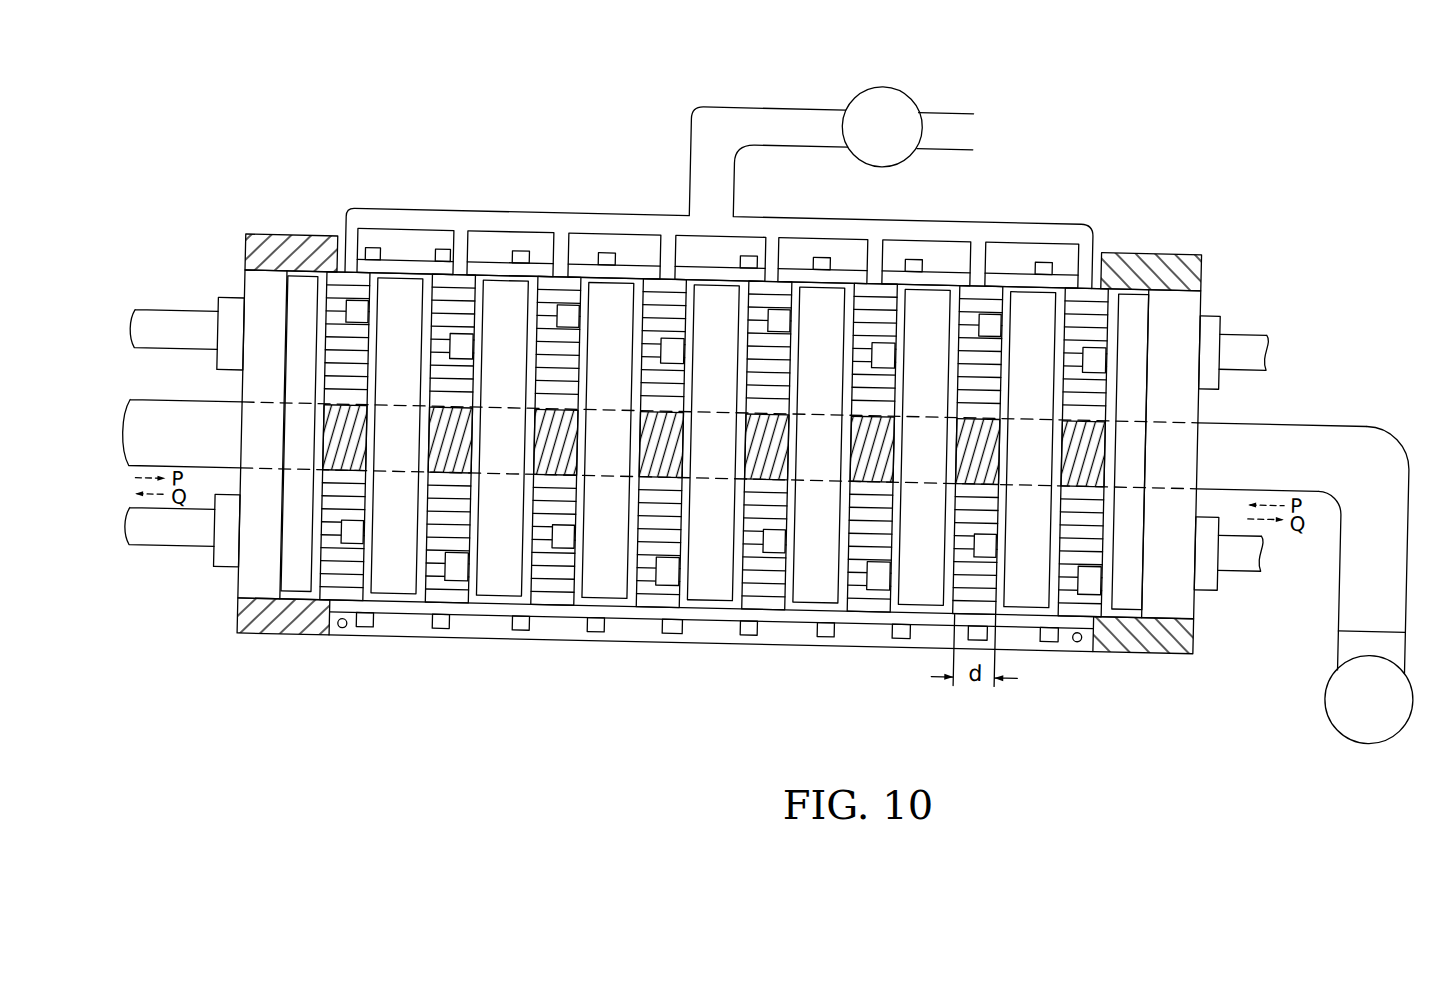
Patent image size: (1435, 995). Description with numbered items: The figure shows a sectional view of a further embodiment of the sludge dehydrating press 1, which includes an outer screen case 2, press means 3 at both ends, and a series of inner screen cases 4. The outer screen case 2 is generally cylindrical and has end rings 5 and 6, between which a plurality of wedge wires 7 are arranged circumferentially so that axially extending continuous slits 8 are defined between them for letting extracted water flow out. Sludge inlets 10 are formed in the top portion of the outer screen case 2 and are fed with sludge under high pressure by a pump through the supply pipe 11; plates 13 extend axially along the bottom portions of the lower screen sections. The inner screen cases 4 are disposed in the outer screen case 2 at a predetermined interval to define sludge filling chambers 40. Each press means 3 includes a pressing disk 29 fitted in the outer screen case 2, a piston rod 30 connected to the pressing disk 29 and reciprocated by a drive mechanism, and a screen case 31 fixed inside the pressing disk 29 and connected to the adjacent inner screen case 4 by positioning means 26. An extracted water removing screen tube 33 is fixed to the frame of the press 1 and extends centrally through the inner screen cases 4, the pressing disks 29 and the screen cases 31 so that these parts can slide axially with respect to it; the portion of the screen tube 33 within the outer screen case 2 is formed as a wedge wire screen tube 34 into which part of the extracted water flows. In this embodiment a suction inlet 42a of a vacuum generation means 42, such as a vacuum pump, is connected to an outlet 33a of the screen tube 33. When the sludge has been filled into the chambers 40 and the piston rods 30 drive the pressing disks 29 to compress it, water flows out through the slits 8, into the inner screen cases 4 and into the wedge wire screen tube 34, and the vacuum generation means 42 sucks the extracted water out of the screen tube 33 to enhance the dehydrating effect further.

The sludge dehydrating press 1 is at (1112, 80).
The outer screen case 2 is at (788, 608).
The press means 3 is at (164, 275).
The inner screen case 4 is at (623, 292).
The end ring 5 is at (302, 246).
The end ring 6 is at (1140, 236).
The wedge wire 7 is at (667, 503).
The slit 8 is at (662, 481).
The sludge inlet 10 is at (990, 234).
The supply pipe 11 is at (552, 207).
The plate 13 is at (858, 625).
The positioning means 26 is at (464, 338).
The pressing disk 29 is at (270, 583).
The piston rod 30 is at (194, 313).
The screen case 31 is at (305, 577).
The extracted water removing screen tube 33 is at (1259, 416).
The outlet 33a is at (1386, 503).
The wedge wire screen tube 34 is at (447, 458).
The sludge filling chamber 40 is at (995, 486).
The vacuum generation means 42 is at (1334, 674).
The suction inlet 42a is at (1348, 626).